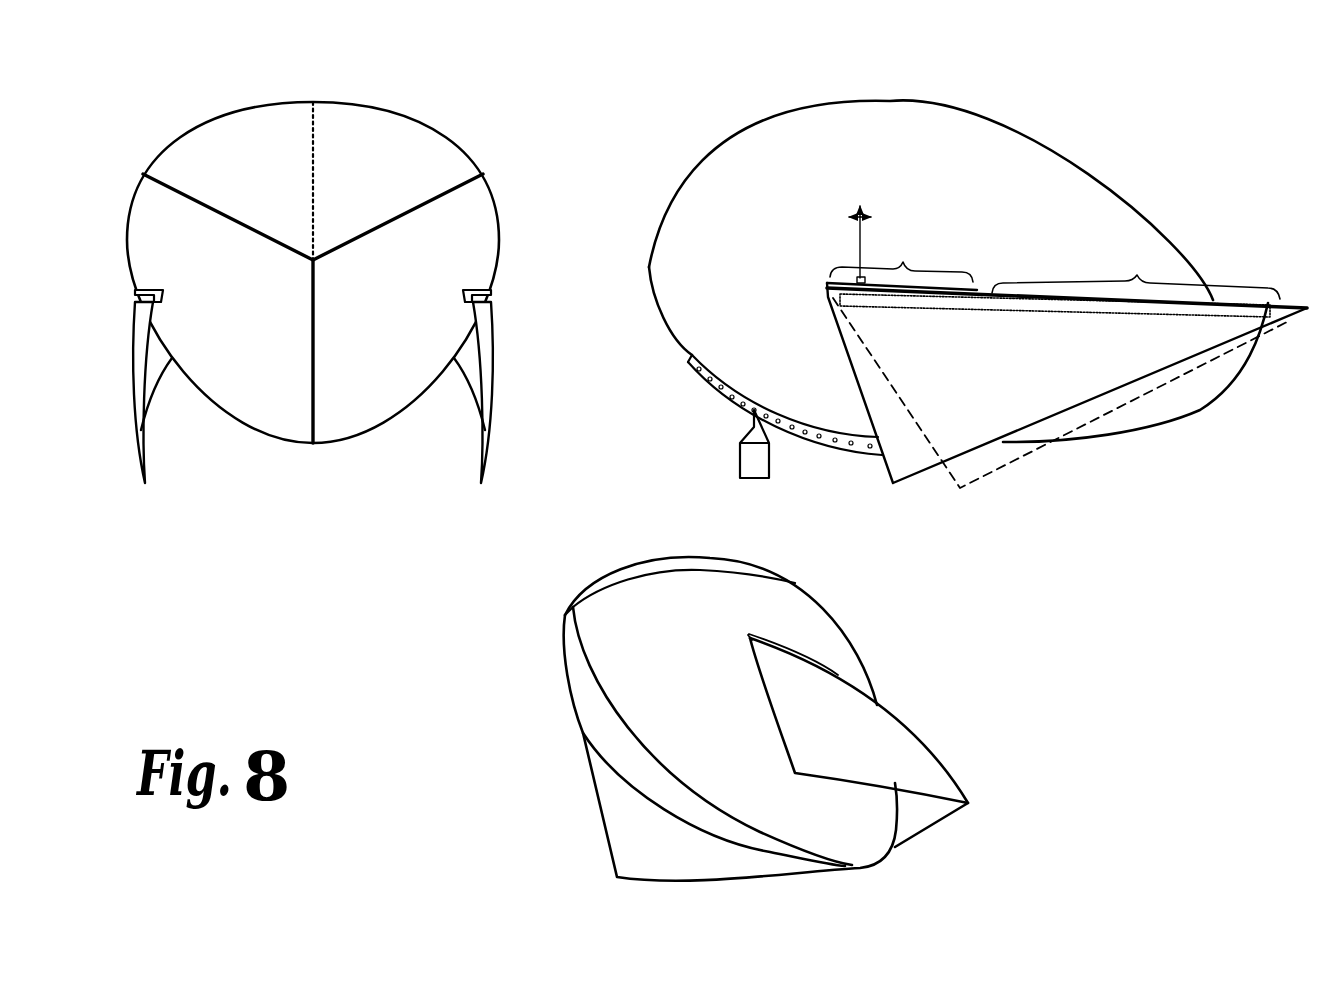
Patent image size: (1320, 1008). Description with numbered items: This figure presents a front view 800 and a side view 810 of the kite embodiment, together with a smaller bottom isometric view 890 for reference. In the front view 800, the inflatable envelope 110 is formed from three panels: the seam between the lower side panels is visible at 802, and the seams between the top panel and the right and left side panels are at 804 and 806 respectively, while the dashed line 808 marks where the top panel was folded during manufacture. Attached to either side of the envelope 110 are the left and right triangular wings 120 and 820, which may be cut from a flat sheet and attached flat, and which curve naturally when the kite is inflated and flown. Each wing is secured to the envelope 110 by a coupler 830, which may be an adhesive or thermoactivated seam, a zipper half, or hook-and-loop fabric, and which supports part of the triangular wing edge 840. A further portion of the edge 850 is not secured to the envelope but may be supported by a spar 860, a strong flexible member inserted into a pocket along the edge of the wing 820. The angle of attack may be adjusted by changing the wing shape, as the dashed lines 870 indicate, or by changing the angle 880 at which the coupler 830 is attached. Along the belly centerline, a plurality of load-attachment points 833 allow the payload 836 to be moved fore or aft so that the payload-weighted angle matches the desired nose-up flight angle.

The inflatable envelope 110 is at (697, 171).
The side fins 120 is at (150, 470).
The front view 800 is at (170, 115).
The seam between the lower/side panels 802 is at (304, 351).
The seam between the top panel and the right side panel 804 is at (228, 217).
The seam between the top panel and the left side panel 806 is at (398, 214).
The dashed line 808 is at (322, 142).
The side view 810 is at (1181, 121).
The right triangular wing 820 is at (873, 473).
The coupler 830 is at (465, 280).
The load-attachment points 833 is at (702, 383).
The payload 836 is at (743, 458).
The triangular edge of the wing 840 is at (901, 260).
The further portion of the wing edge 850 is at (1136, 275).
The spar 860 is at (970, 310).
The dashed lines 870 is at (975, 490).
The angle 880 is at (852, 207).
The bottom isometric view 890 is at (905, 708).